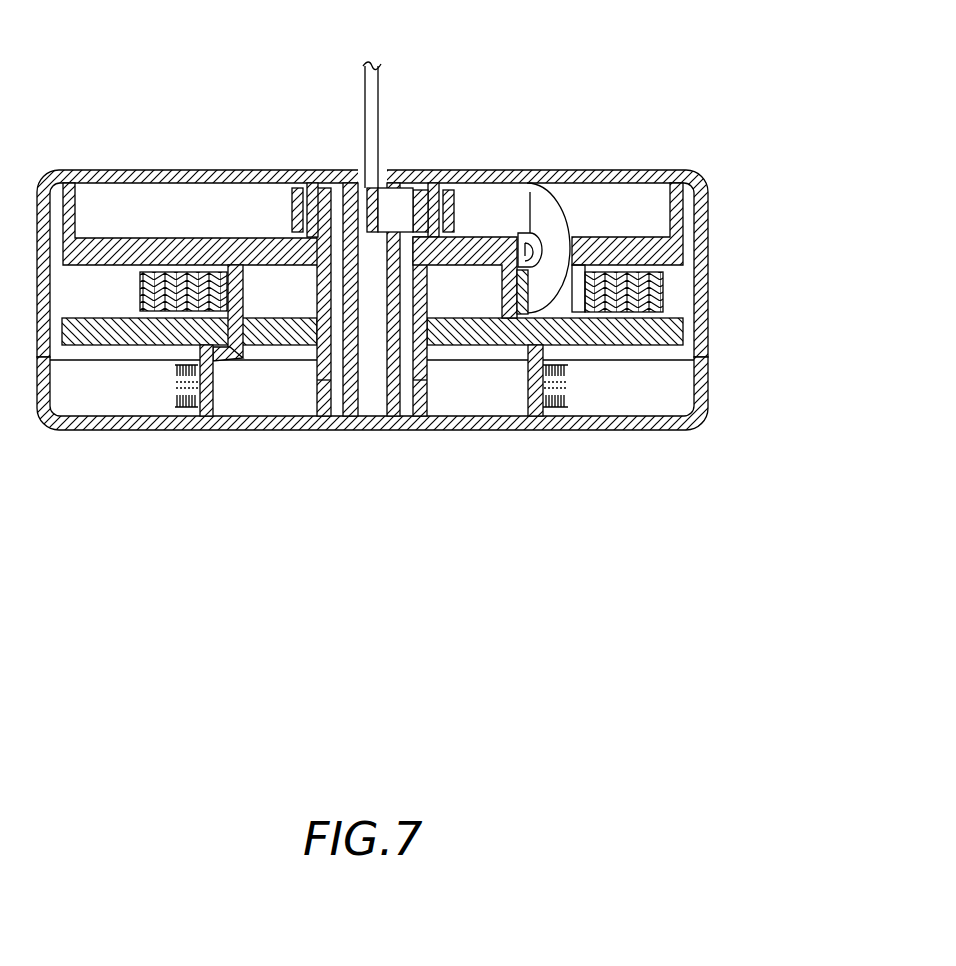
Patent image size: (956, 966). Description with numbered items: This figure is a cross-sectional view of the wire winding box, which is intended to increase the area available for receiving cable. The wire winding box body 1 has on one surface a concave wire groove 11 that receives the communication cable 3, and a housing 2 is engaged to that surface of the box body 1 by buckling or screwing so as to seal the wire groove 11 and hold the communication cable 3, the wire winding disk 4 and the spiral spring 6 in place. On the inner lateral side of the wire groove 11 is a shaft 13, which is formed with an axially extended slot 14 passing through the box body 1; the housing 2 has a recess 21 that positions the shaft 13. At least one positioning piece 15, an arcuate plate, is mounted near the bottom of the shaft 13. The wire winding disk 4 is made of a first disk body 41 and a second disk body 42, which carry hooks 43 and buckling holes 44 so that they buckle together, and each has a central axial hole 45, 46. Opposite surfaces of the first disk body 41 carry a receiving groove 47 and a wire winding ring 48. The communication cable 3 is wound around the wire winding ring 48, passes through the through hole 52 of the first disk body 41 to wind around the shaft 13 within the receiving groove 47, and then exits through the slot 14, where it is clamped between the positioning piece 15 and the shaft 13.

The wire winding box body 1 is at (700, 228).
The housing 2 is at (700, 393).
The communication cable 3 is at (663, 301).
The wire winding disk 4 is at (190, 191).
The spiral spring 6 is at (553, 407).
The wire groove 11 is at (683, 312).
The shaft 13 is at (348, 408).
The slot 14 is at (372, 400).
The positioning piece 15 is at (424, 232).
The recess 21 is at (335, 392).
The first disk body 41 is at (187, 250).
The second disk body 42 is at (90, 338).
The hook 43 is at (225, 348).
The buckling hole 44 is at (197, 395).
The central axial hole 45 is at (303, 228).
The central axial hole 46 is at (425, 382).
The receiving groove 47 is at (620, 207).
The wire winding ring 48 is at (248, 262).
The through hole 52 is at (525, 253).